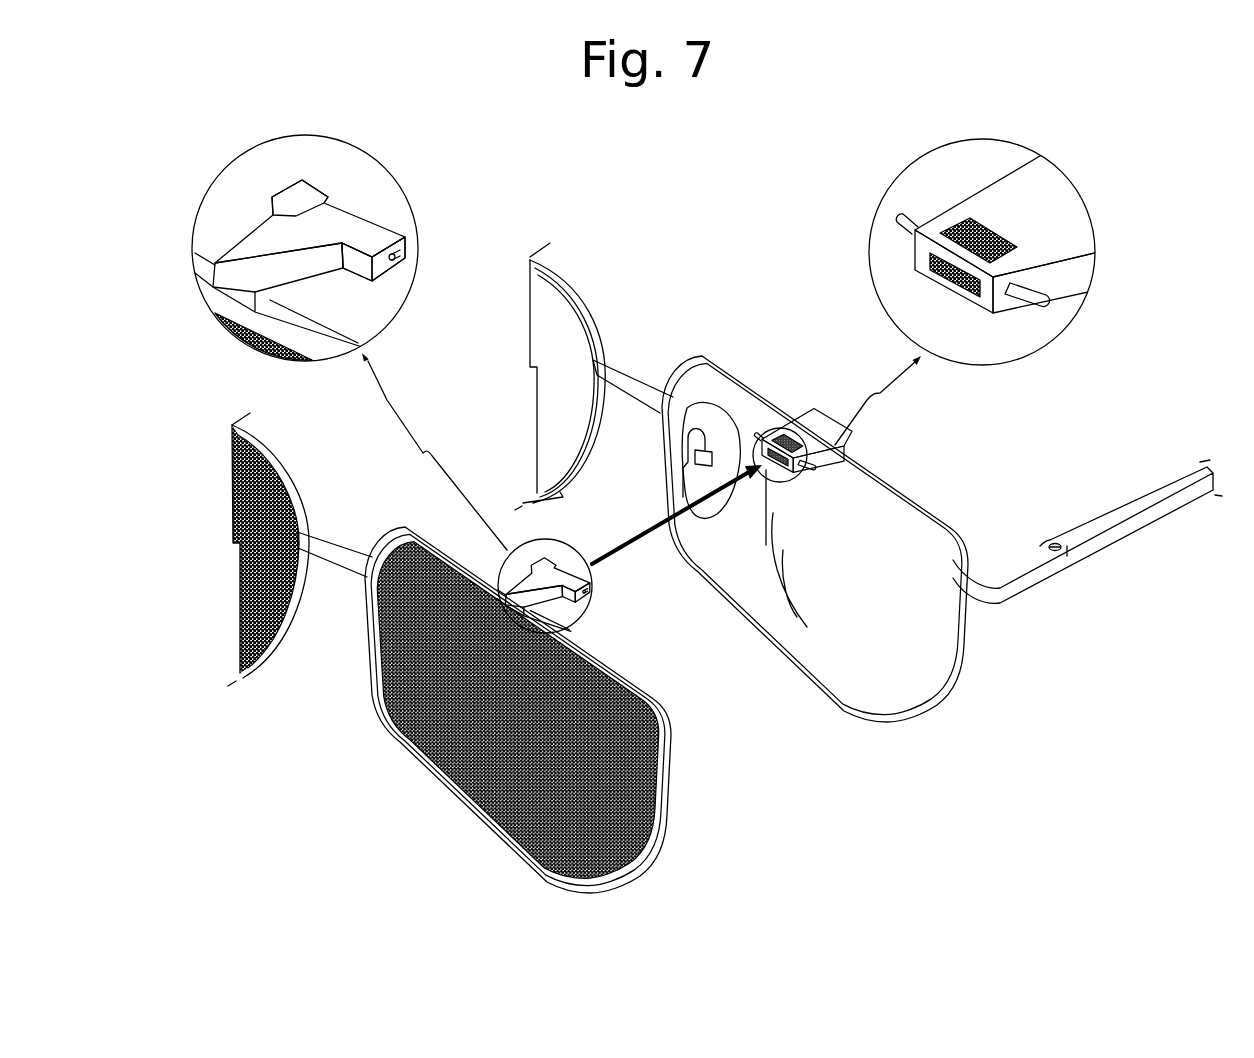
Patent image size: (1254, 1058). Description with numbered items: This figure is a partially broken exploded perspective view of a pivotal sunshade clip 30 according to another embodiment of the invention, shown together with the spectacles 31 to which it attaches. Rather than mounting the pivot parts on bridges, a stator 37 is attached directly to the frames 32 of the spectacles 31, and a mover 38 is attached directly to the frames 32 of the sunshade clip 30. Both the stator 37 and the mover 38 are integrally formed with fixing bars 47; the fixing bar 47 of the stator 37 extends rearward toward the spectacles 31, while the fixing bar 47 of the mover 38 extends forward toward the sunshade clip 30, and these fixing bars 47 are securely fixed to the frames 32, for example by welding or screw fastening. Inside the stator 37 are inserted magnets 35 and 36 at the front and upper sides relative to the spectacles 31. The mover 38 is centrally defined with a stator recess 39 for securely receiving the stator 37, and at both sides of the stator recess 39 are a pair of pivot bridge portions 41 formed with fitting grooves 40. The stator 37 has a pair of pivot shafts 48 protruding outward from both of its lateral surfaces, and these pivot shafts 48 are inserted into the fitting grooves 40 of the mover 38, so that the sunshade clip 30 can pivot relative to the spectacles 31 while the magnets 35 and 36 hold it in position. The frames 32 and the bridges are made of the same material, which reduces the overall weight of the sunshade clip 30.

The sunshade clip 30 is at (618, 718).
The spectacles 31 is at (980, 513).
The frames 32 is at (920, 487).
The magnet 35 is at (925, 264).
The magnet 36 is at (977, 225).
The stator 37 is at (807, 473).
The mover 38 is at (603, 610).
The stator recess 39 is at (360, 213).
The fitting grooves 40 is at (395, 260).
The pivot bridge portions 41 is at (307, 190).
The fixing bars 47 is at (233, 293).
The pivot shafts 48 is at (910, 217).